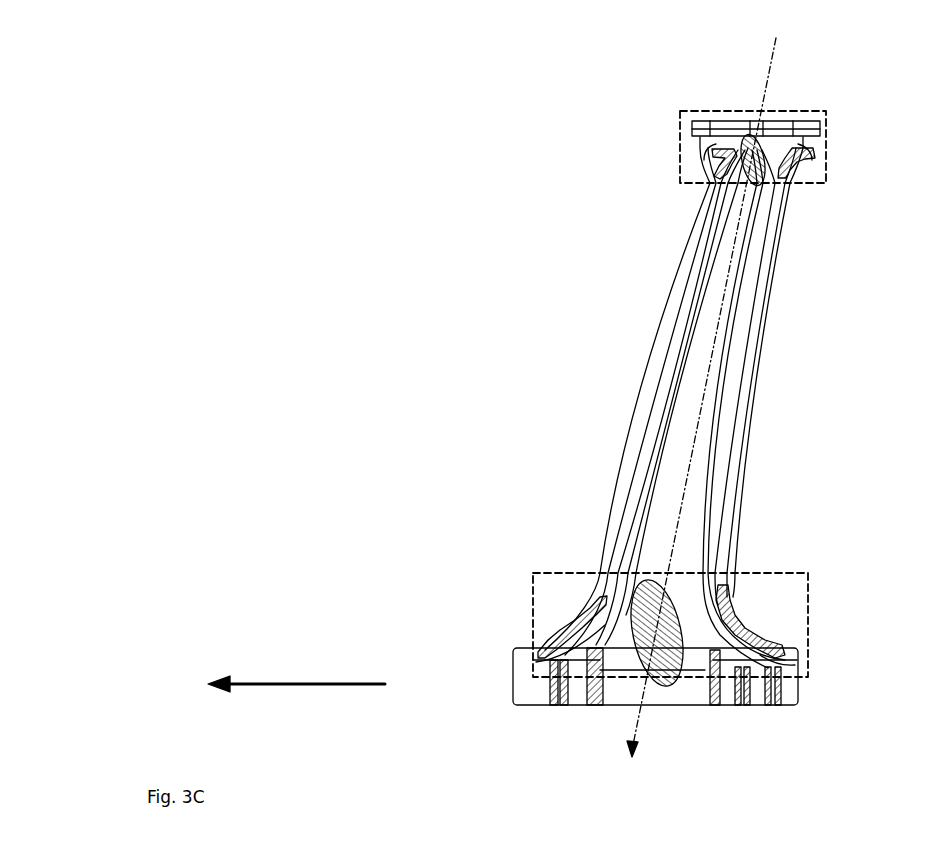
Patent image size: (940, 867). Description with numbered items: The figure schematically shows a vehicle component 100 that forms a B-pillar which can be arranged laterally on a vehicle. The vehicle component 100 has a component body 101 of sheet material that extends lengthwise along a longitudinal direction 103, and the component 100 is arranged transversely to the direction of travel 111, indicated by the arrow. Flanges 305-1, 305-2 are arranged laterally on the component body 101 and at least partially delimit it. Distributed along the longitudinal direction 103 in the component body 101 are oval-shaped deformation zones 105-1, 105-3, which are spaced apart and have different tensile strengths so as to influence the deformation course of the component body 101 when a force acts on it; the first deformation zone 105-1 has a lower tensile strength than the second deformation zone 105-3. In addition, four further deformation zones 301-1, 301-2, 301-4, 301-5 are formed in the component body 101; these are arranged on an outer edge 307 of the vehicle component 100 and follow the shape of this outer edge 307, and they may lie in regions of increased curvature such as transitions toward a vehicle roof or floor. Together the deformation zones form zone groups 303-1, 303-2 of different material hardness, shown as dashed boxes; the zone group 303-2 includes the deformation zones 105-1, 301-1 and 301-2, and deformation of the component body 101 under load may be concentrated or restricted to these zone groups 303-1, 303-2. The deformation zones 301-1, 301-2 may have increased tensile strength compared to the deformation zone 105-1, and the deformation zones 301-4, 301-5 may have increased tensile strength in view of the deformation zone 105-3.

The vehicle component 100 is at (593, 260).
The component body 101 is at (762, 287).
The longitudinal direction 103 is at (714, 385).
The first deformation zone 105-1 is at (677, 610).
The second deformation zone 105-3 is at (768, 158).
The direction of travel 111 is at (296, 675).
The further deformation zone 301-1 is at (775, 645).
The further deformation zone 301-2 is at (550, 650).
The further deformation zone 301-4 is at (808, 150).
The further deformation zone 301-5 is at (714, 152).
The zone group 303-1 is at (585, 572).
The zone group 303-2 is at (738, 110).
The flange 305-1 is at (637, 445).
The flange 305-2 is at (733, 433).
The outer edge 307 is at (740, 613).